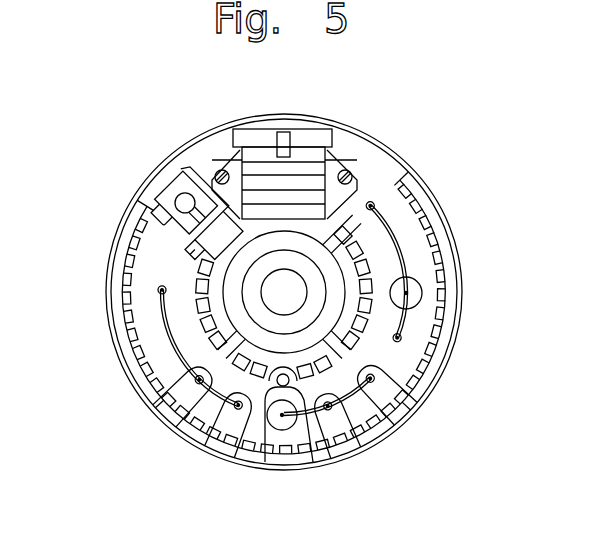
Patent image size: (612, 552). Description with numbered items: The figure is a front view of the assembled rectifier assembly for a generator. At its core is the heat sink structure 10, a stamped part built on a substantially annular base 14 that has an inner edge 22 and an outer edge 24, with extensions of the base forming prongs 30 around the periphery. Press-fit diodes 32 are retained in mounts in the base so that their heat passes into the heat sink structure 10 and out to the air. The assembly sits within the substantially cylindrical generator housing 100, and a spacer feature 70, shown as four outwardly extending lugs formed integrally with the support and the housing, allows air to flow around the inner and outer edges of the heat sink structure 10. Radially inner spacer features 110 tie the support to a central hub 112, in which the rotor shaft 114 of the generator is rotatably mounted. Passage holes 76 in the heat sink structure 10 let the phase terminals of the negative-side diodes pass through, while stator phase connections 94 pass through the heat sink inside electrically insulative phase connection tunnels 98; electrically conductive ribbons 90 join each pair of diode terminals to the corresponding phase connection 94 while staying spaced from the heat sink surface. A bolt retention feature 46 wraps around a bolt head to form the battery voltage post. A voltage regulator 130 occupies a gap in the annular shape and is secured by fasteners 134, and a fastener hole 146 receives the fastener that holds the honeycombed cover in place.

The heat sink structure 10 is at (112, 298).
The substantially annular base 14 is at (358, 182).
The inner edge 22 is at (384, 286).
The outer edge 24 is at (456, 258).
The prongs 30 is at (416, 205).
The diode 32 is at (424, 293).
The bolt retention feature 46 is at (188, 188).
The spacer feature 70 is at (397, 190).
The passage holes 76 is at (370, 202).
The electrically conductive ribbon 90 is at (402, 347).
The phase connections 94 is at (404, 342).
The phase connection tunnels 98 is at (380, 380).
The generator housing 100 is at (460, 284).
The radially inner spacer features 110 is at (226, 348).
The hub 112 is at (220, 253).
The rotor shaft 114 is at (272, 301).
The voltage regulator 130 is at (272, 128).
The fasteners 134 is at (222, 170).
The fastener hole 146 is at (284, 432).